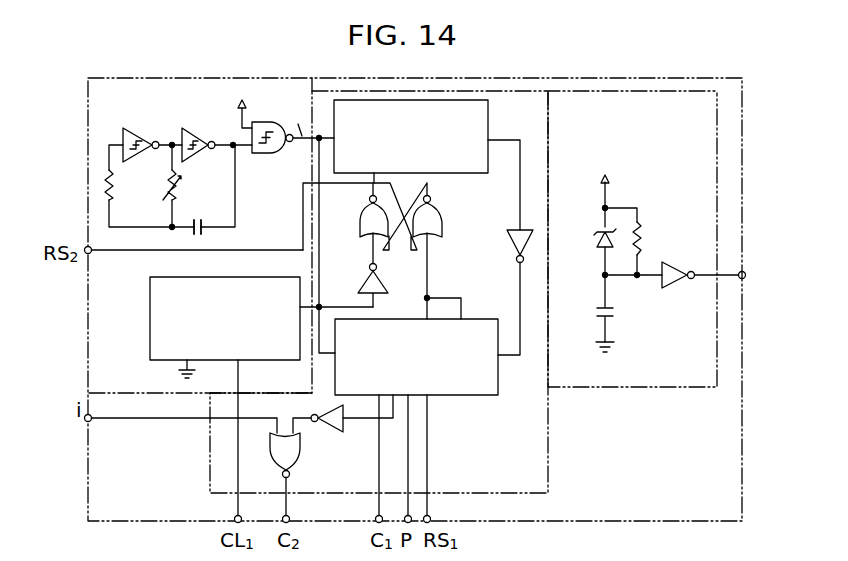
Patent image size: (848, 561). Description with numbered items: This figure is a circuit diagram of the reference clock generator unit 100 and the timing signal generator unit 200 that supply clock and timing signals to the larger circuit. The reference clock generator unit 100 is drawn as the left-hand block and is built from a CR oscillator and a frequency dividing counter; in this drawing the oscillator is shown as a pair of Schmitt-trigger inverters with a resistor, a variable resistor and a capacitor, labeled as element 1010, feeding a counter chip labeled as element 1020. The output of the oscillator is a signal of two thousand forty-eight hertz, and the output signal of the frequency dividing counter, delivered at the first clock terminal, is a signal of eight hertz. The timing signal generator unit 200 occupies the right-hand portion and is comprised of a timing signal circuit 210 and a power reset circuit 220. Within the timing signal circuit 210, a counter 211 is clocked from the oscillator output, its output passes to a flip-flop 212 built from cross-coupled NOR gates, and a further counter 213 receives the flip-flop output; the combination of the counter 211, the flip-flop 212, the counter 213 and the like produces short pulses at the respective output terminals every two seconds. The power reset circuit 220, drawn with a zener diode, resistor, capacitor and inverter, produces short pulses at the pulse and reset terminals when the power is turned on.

The reference clock generator unit 100 is at (142, 77).
The Schmitt trigger oscillator 1010 is at (170, 121).
The binary counter TC4040 1020 is at (150, 310).
The timing signal generator unit 200 is at (648, 78).
The timing signal circuit 210 is at (497, 91).
The counter 211 is at (488, 116).
The flip-flop 212 is at (427, 253).
The counter 213 is at (488, 318).
The power reset circuit 220 is at (648, 387).